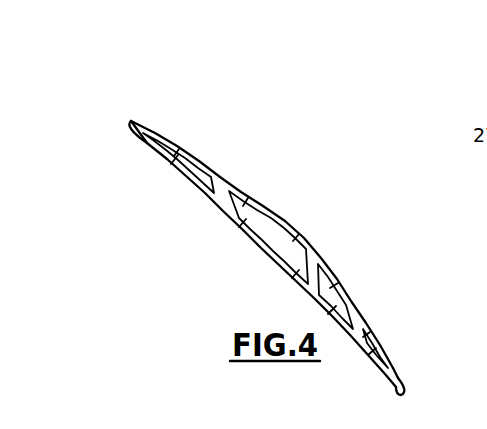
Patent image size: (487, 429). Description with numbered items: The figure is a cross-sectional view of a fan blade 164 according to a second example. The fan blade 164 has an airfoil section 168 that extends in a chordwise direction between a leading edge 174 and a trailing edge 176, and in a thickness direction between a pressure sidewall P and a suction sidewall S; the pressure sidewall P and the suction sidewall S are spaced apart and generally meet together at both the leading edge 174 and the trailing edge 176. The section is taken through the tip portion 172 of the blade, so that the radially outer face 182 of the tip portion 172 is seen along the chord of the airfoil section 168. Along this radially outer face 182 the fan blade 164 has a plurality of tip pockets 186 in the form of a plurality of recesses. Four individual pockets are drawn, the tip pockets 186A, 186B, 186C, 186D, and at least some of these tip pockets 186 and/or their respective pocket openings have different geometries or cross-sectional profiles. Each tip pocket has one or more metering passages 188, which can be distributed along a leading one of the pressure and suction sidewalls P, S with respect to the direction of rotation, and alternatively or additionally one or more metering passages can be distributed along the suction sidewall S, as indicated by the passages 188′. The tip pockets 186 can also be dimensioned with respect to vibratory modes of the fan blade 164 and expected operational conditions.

The fan blade 164 is at (133, 100).
The vane 168 is at (143, 160).
The tip portion 172 is at (272, 256).
The leading edge 174 is at (127, 132).
The trailing edge 176 is at (407, 389).
The radially outer face 182 is at (311, 255).
The tip pockets 186 is at (210, 185).
The tip pocket 186A is at (207, 198).
The tip pocket 186B is at (253, 238).
The tip pocket 186C is at (350, 313).
The tip pocket 186D is at (382, 354).
The ribs 188 is at (168, 161).
The metering passages 188′ is at (202, 163).
The suction sidewall S is at (305, 238).
The pressure sidewall P is at (264, 251).